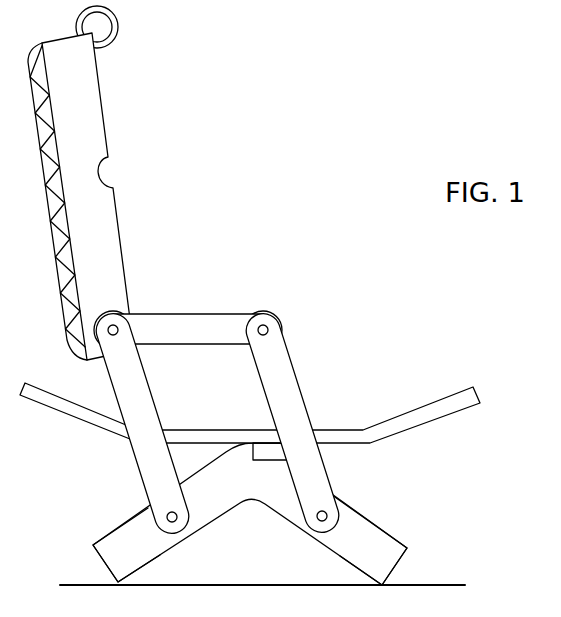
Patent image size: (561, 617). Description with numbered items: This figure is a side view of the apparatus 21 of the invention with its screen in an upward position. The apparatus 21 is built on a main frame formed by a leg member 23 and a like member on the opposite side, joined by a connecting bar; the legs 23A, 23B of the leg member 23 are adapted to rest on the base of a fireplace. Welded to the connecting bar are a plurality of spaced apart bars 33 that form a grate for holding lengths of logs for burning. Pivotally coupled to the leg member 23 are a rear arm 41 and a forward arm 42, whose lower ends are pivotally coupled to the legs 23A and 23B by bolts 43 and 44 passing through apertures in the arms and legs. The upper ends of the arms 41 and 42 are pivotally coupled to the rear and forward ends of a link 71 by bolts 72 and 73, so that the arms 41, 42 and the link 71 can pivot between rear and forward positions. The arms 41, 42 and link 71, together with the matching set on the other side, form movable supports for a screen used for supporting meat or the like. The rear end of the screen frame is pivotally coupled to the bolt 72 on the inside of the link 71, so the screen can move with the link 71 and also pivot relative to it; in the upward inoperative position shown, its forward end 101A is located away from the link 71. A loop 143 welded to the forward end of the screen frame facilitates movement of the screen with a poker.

The loop 143 is at (119, 24).
The forward end of the screen 101A is at (107, 57).
The apparatus 21 is at (154, 196).
The link 71 is at (177, 313).
The bolt 72 is at (116, 322).
The bolt 73 is at (264, 323).
The rear arm 41 is at (147, 386).
The forward arm 42 is at (290, 368).
The bolt 43 is at (173, 521).
The bolt 44 is at (317, 521).
The bar 33 is at (447, 396).
The leg member 23 is at (352, 492).
The leg 23A is at (128, 518).
The leg 23B is at (380, 525).